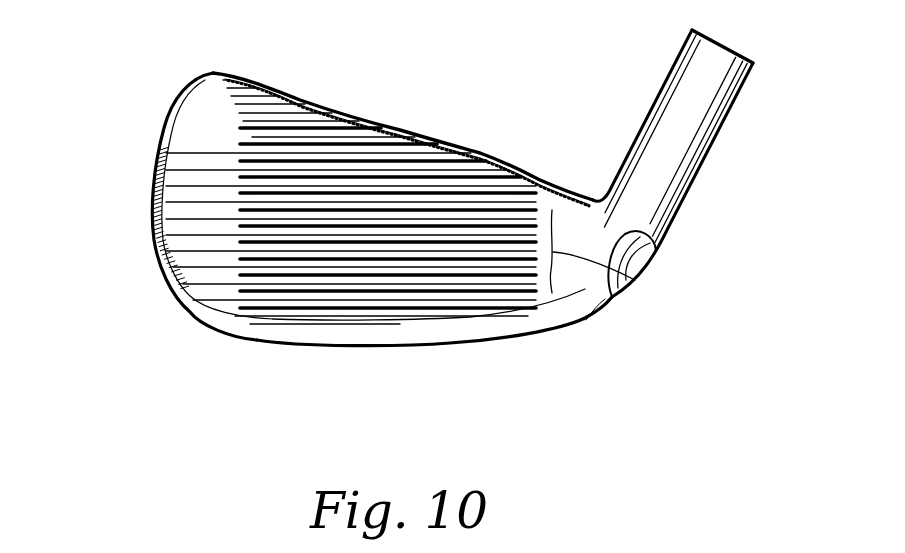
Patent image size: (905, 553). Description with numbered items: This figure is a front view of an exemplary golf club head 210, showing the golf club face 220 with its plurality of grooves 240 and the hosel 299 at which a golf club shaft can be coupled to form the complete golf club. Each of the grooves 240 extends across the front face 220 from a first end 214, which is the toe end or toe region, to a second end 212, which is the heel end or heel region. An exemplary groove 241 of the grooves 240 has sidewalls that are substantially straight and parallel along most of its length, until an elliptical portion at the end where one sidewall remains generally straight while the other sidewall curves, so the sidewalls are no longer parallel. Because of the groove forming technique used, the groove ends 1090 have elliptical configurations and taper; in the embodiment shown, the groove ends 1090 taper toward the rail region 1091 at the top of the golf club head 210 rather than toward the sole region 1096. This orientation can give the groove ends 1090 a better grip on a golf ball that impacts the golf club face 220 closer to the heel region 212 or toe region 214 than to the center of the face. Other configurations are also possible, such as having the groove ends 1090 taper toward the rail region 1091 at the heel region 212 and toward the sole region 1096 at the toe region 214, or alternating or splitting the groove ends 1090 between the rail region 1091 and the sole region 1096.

The golf club head 210 is at (193, 87).
The second end 212 is at (596, 336).
The first end 214 is at (126, 180).
The golf club face 220 is at (157, 247).
The grooves 240 is at (398, 275).
The exemplary groove 241 is at (280, 308).
The hosel 299 is at (680, 160).
The groove ends 1090 is at (617, 263).
The rail region 1091 is at (377, 99).
The sole region 1096 is at (354, 368).